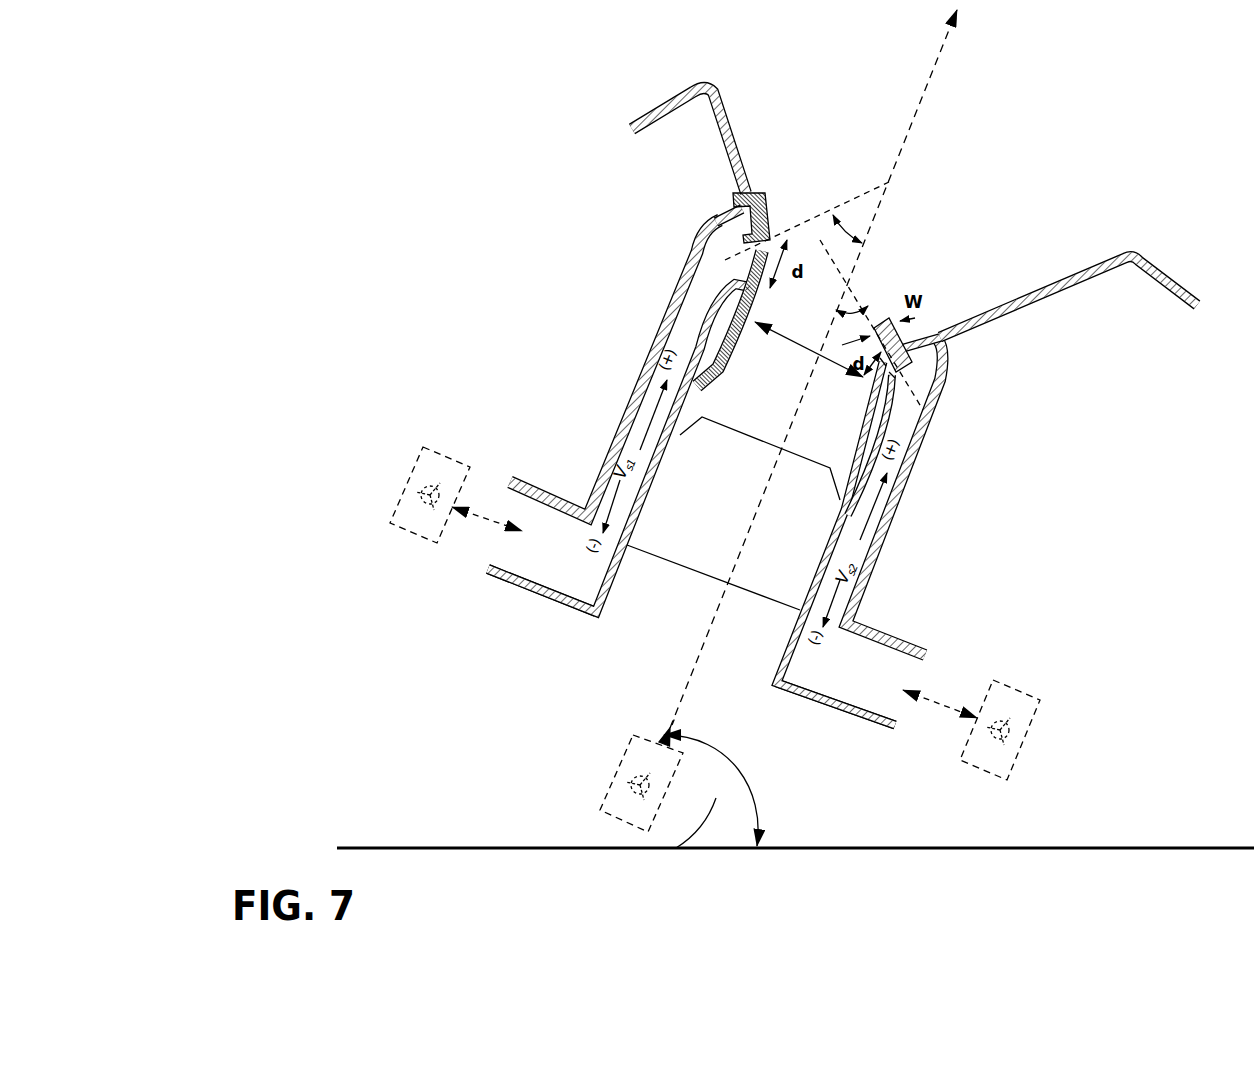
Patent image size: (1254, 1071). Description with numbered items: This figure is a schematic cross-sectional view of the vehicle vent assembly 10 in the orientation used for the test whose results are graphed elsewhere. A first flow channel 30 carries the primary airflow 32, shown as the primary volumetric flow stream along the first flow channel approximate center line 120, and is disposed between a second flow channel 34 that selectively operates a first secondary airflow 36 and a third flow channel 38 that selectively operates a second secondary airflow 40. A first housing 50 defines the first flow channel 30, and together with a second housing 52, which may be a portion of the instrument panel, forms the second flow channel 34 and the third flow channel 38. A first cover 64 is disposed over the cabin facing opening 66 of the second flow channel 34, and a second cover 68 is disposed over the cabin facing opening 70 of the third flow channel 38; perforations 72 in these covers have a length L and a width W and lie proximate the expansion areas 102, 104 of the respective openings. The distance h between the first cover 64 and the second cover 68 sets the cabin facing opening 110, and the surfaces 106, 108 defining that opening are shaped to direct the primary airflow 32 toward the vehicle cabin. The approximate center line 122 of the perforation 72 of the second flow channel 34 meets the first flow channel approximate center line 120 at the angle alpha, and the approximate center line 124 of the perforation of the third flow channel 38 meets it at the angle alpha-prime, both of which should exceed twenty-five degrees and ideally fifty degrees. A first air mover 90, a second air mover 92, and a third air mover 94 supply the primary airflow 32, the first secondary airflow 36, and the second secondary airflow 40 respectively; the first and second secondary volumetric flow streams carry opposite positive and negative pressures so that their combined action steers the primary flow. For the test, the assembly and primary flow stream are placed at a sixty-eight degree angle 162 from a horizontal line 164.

The vehicle vent assembly 10 is at (428, 641).
The first flow channel 30 is at (760, 615).
The primary airflow 32 is at (693, 673).
The second flow channel 34 is at (625, 443).
The first secondary airflow 36 is at (497, 515).
The third flow channel 38 is at (868, 586).
The second secondary airflow 40 is at (938, 703).
The first housing 50 is at (548, 590).
The second housing 52 is at (655, 350).
The first cover 64 is at (762, 205).
The cabin facing opening 66 is at (740, 268).
The second cover 68 is at (928, 332).
The cabin facing opening 70 is at (905, 398).
The perforations 72 is at (770, 208).
The first air mover 90 is at (620, 778).
The second air mover 92 is at (420, 465).
The third air mover 94 is at (1012, 683).
The expansion area 102 is at (727, 222).
The expansion area 104 is at (900, 382).
The surface 106 is at (737, 352).
The surface 108 is at (845, 420).
The cabin facing opening 110 is at (765, 399).
The first flow channel approximate center line 120 is at (713, 589).
The approximate center line of the perforation 122 is at (847, 200).
The approximate center line of the perforation 124 is at (878, 305).
The 68 degree angle 162 is at (676, 848).
The horizontal line 164 is at (1138, 850).